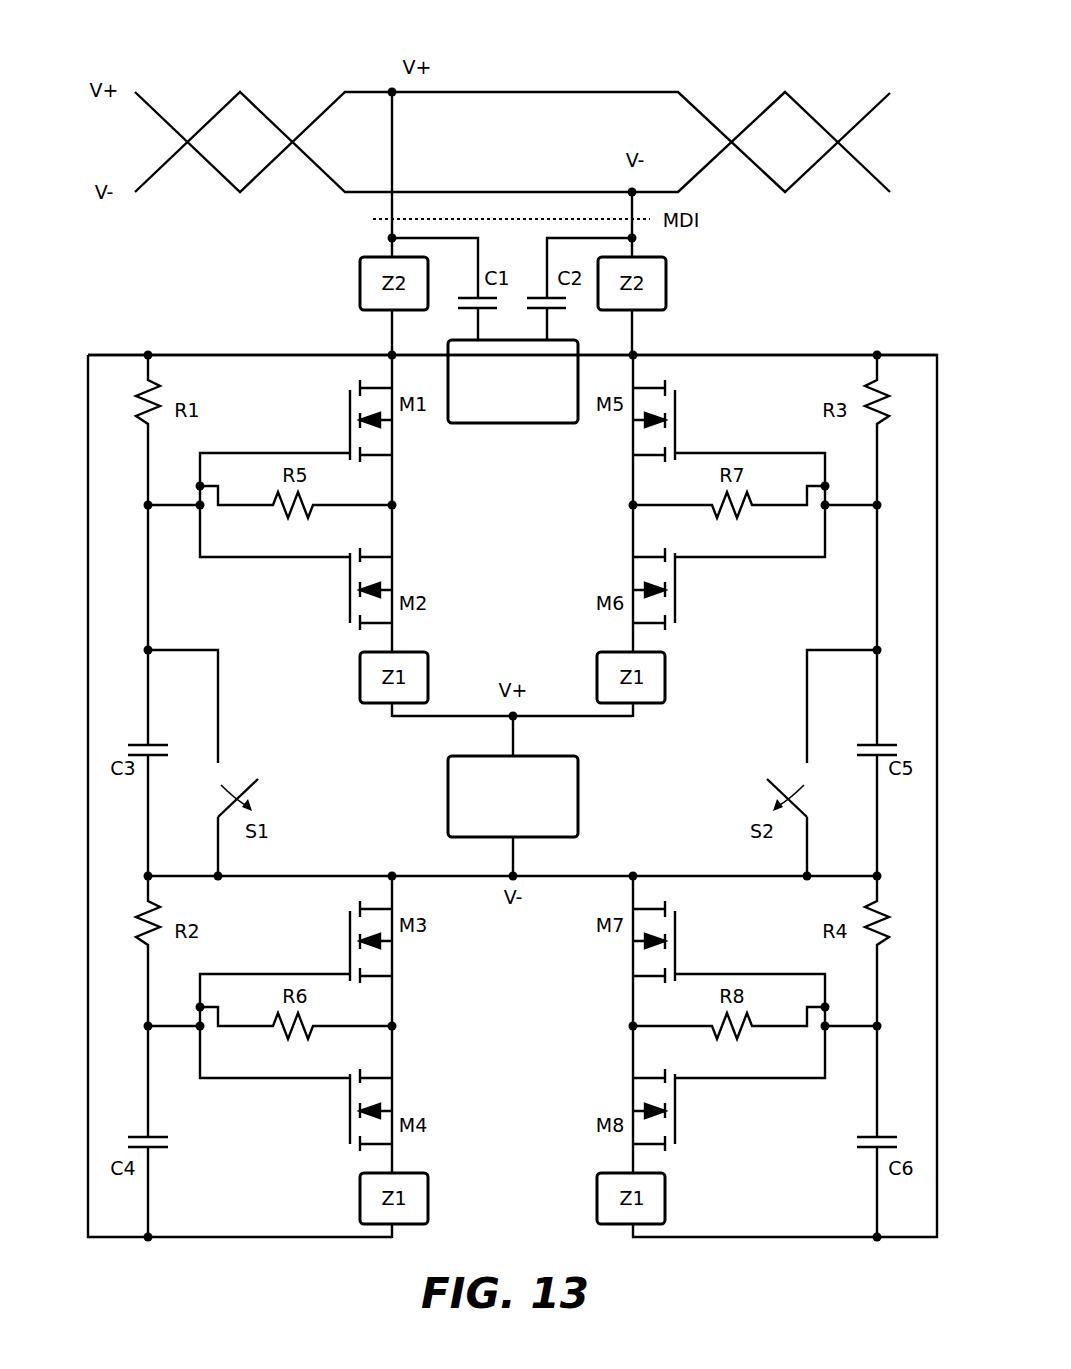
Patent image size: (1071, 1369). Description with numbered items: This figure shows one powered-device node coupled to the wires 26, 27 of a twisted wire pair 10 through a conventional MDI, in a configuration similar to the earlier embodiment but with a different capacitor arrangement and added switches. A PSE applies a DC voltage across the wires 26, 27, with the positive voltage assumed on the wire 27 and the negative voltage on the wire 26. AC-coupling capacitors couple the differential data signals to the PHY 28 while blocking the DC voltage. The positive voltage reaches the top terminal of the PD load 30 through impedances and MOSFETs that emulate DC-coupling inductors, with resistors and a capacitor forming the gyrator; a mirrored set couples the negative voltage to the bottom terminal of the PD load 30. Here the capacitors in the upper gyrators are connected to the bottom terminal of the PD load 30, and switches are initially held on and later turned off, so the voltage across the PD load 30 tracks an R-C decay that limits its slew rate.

The twisted wire pair 10 is at (341, 55).
The wire 26 is at (148, 182).
The wire 27 is at (147, 100).
The PHY 28 is at (490, 423).
The PD load 30 is at (578, 810).